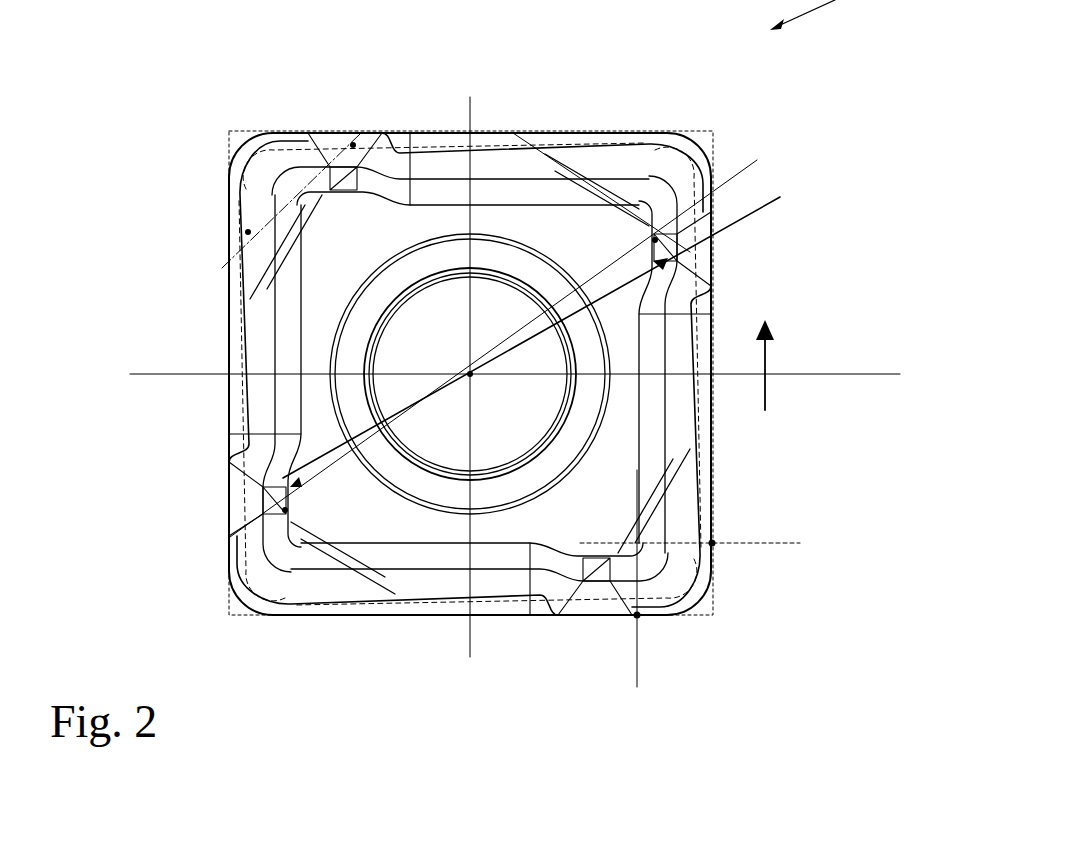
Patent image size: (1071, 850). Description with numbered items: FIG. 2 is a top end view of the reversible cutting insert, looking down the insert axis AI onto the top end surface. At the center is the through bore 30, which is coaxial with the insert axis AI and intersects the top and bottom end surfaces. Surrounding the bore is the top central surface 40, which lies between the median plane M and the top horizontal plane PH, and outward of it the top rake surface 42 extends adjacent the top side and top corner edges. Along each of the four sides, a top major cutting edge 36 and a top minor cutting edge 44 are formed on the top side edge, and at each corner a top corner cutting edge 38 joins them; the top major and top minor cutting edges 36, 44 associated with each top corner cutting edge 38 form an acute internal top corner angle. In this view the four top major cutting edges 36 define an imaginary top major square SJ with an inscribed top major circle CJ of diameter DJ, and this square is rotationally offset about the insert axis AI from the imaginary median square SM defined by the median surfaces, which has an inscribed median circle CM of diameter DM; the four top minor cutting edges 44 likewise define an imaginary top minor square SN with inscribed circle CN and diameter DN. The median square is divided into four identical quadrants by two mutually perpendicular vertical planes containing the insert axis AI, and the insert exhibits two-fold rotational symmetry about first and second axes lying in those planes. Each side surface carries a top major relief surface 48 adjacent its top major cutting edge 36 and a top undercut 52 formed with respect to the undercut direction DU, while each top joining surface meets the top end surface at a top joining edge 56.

The through bore 30 is at (460, 438).
The top major cutting edge 36 is at (600, 133).
The top corner cutting edge 38 is at (242, 163).
The top central surface 40 is at (368, 521).
The top rake surface 42 is at (430, 578).
The top minor cutting edge 44 is at (332, 166).
The top major relief surface 48 is at (703, 456).
The top undercut 52 is at (711, 339).
The top joining edge 56 is at (708, 305).